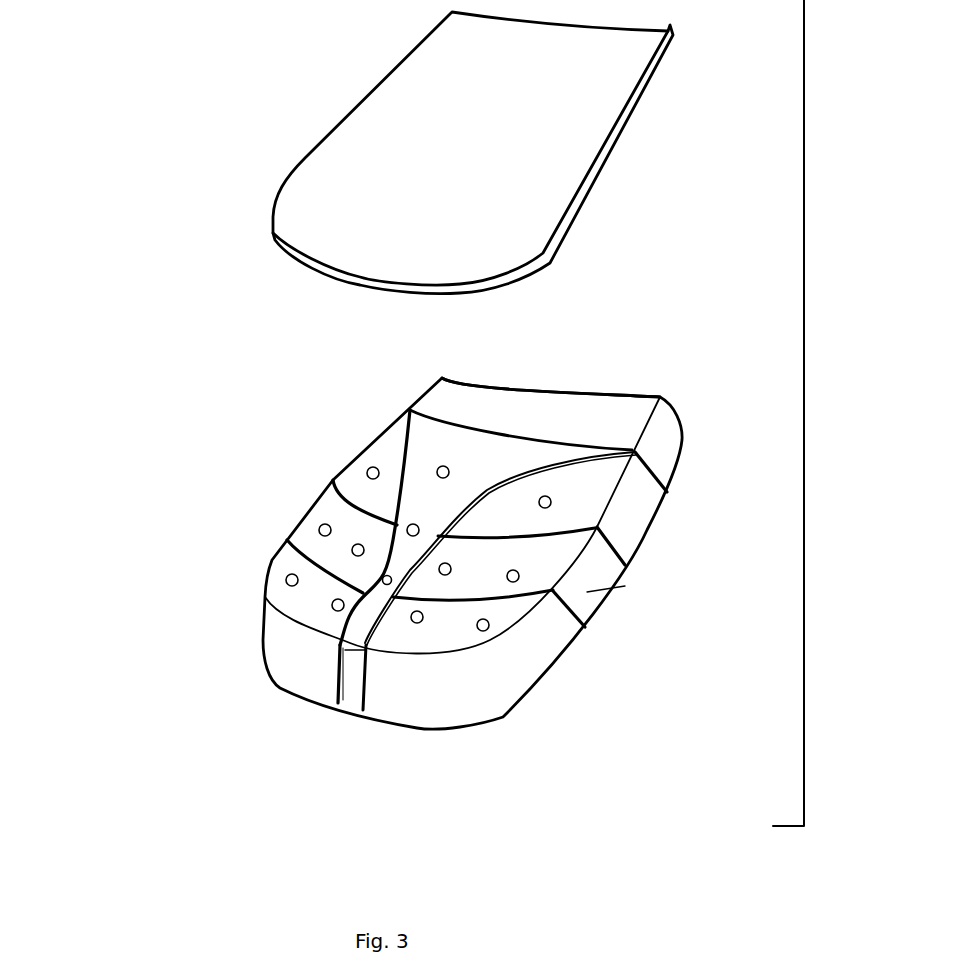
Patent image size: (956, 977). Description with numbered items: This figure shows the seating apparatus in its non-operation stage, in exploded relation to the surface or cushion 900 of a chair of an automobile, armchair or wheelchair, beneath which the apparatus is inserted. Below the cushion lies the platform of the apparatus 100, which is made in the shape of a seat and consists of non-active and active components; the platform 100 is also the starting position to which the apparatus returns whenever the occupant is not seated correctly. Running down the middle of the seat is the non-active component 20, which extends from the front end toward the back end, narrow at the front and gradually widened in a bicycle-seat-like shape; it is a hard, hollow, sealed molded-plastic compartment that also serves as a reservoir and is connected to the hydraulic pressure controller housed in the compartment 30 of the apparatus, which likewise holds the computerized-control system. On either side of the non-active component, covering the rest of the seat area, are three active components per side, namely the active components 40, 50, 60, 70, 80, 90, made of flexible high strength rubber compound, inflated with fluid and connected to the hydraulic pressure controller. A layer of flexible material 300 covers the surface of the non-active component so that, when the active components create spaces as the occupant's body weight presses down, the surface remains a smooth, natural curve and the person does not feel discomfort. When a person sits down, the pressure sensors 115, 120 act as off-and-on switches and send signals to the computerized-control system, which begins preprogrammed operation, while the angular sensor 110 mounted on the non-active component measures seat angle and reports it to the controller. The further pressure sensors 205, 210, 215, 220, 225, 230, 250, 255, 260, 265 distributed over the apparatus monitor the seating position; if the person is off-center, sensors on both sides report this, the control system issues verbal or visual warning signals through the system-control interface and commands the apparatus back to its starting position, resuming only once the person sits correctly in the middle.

The surface or cushion 900 is at (275, 167).
The platform of the apparatus 100 is at (294, 487).
The compartment of the apparatus 30 is at (570, 410).
The non-active component 20 is at (410, 411).
The angular sensor 110 is at (420, 524).
The pressure sensor 120 is at (437, 462).
The pressure sensor 205 is at (360, 464).
The active component 40 is at (355, 469).
The active component 60 is at (293, 522).
The pressure sensor 210 is at (313, 532).
The pressure sensor 250 is at (345, 552).
The pressure sensor 215 is at (278, 580).
The active component 80 is at (272, 633).
The pressure sensor 220 is at (553, 500).
The active component 50 is at (670, 493).
The pressure sensor 260 is at (600, 527).
The pressure sensor 225 is at (460, 565).
The active component 70 is at (530, 578).
The active component 90 is at (507, 685).
The pressure sensor 230 is at (483, 640).
The pressure sensor 265 is at (423, 628).
The pressure sensor 115 is at (386, 585).
The pressure sensor 255 is at (325, 606).
The layer of flexible material 300 is at (338, 650).